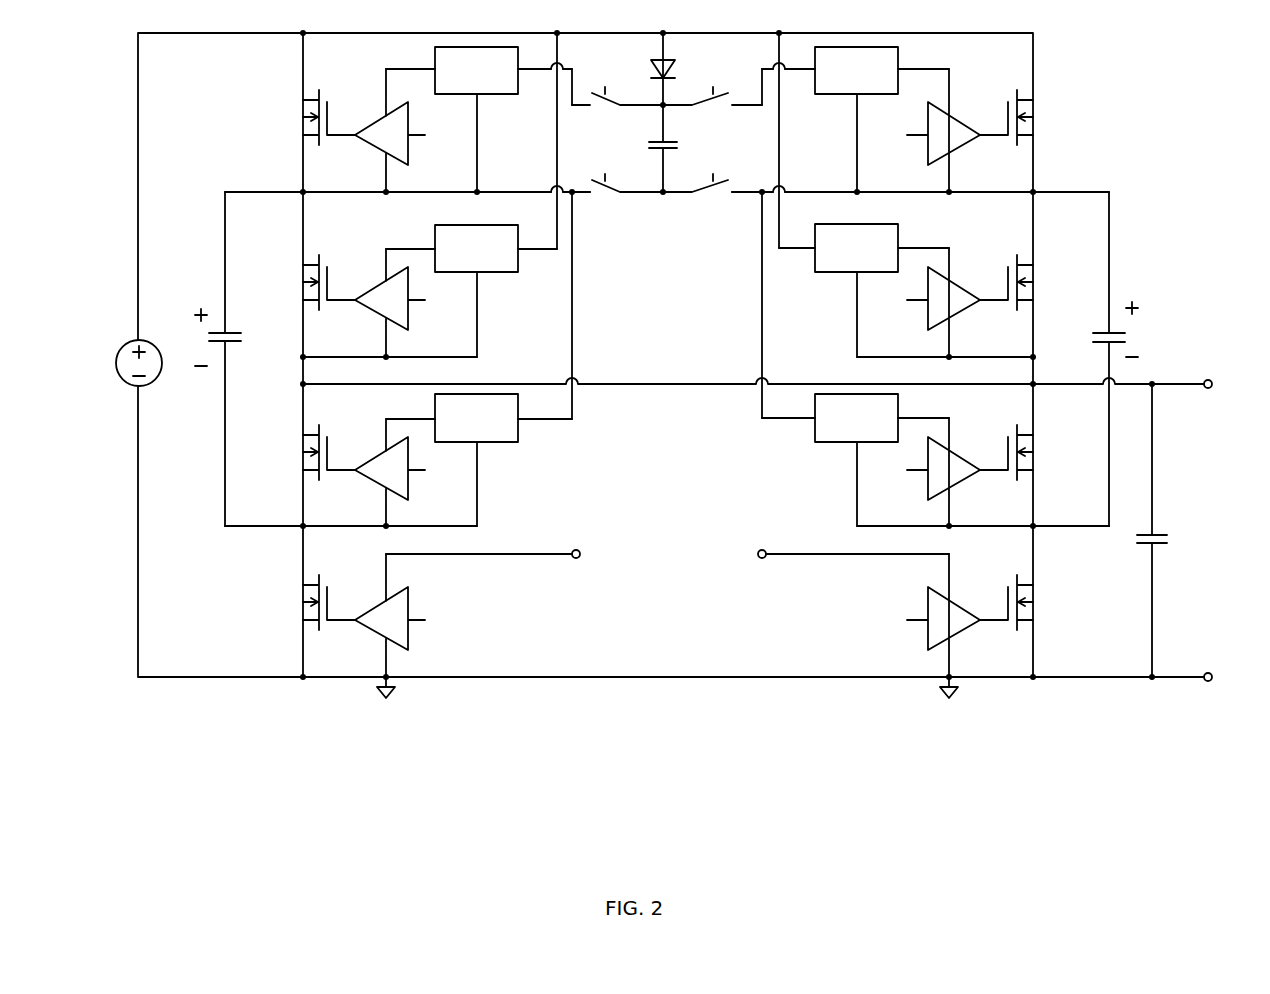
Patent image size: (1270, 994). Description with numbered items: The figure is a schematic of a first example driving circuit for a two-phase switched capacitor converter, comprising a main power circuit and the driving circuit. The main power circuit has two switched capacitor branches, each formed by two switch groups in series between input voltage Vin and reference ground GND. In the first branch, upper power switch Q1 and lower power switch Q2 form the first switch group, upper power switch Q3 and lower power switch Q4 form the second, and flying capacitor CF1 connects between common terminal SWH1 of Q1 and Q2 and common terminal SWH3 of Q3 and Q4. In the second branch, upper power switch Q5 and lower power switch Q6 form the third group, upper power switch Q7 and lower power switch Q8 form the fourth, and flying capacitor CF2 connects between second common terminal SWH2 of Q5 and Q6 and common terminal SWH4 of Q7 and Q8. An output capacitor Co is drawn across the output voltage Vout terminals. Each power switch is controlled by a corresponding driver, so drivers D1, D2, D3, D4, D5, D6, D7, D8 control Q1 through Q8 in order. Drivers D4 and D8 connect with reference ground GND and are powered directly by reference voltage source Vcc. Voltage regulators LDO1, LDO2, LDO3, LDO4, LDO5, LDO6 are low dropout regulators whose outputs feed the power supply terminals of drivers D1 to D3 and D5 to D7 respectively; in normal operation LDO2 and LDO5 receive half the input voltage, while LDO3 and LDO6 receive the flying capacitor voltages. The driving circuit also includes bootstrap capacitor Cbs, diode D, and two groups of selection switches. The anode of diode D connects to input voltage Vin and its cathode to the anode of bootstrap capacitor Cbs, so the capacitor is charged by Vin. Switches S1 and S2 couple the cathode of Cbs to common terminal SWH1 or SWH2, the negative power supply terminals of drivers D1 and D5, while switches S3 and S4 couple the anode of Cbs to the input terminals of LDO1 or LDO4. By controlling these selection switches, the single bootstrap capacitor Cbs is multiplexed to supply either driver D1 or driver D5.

The input voltage Vin is at (142, 383).
The flying capacitor CF1 is at (219, 337).
The flying capacitor CF2 is at (1115, 329).
The output capacitor Co is at (1166, 542).
The output voltage terminal Vout is at (1198, 530).
The reference voltage source Vcc is at (667, 555).
The reference ground GND is at (667, 693).
The common terminal SWH1 is at (264, 178).
The second common terminal SWH2 is at (1071, 178).
The common terminal SWH3 is at (264, 541).
The common terminal SWH4 is at (1071, 541).
The upper power switch Q1 is at (309, 117).
The lower power switch Q2 is at (309, 282).
The upper power switch Q3 is at (309, 452).
The lower power switch Q4 is at (309, 602).
The upper power switch Q5 is at (1024, 117).
The lower power switch Q6 is at (1024, 282).
The upper power switch Q7 is at (1024, 452).
The lower power switch Q8 is at (1024, 602).
The driver D1 is at (403, 130).
The driver D2 is at (403, 303).
The driver D3 is at (403, 472).
The driver D4 is at (403, 615).
The driver D5 is at (931, 130).
The driver D6 is at (931, 302).
The driver D7 is at (931, 472).
The driver D8 is at (931, 615).
The voltage regulator LDO1 is at (479, 119).
The voltage regulator LDO2 is at (471, 291).
The voltage regulator LDO3 is at (479, 460).
The voltage regulator LDO4 is at (855, 119).
The voltage regulator LDO5 is at (864, 290).
The voltage regulator LDO6 is at (855, 460).
The switch S1 is at (617, 184).
The switch S2 is at (712, 184).
The switch S3 is at (617, 99).
The switch S4 is at (712, 99).
The diode D is at (653, 55).
The bootstrap capacitor Cbs is at (673, 133).